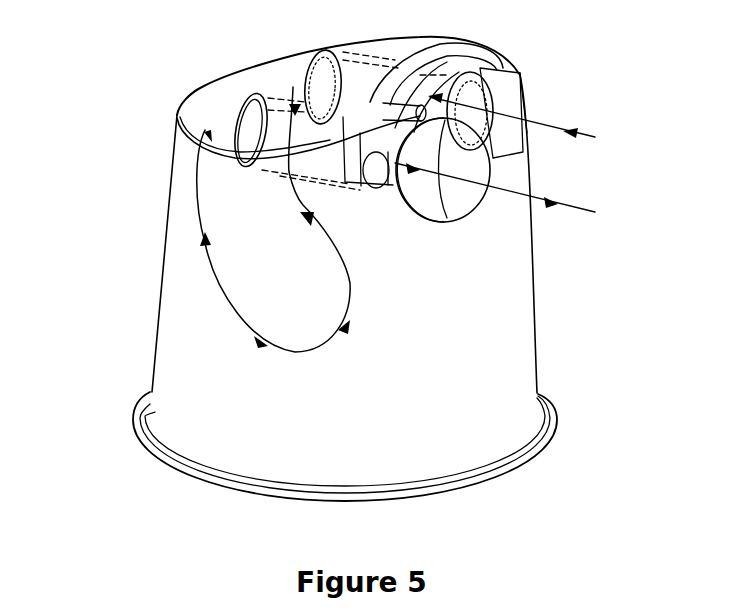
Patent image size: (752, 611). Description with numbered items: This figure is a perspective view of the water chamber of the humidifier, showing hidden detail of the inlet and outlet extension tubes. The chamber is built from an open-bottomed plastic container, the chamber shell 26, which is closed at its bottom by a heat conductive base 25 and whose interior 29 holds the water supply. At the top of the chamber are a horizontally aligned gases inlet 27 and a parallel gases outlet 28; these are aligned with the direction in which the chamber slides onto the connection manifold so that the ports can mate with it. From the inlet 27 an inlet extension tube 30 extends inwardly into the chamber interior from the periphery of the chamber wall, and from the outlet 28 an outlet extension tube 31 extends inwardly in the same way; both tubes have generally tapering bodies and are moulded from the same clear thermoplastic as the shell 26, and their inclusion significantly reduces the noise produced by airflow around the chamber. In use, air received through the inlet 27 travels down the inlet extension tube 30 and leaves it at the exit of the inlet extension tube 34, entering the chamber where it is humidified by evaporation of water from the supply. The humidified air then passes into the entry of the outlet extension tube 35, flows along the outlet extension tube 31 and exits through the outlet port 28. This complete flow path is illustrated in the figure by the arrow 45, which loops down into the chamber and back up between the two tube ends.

The base flange 25 is at (550, 420).
The chamber shell 26 is at (533, 287).
The gases inlet 27 is at (425, 108).
The gases outlet 28 is at (400, 160).
The container interior 29 is at (183, 300).
The inlet extension tube 30 is at (380, 63).
The outlet extension tube 31 is at (300, 172).
The exit of the inlet extension tube 34 is at (303, 73).
The entry of the outlet extension tube 35 is at (400, 143).
The arrow 45 is at (350, 303).